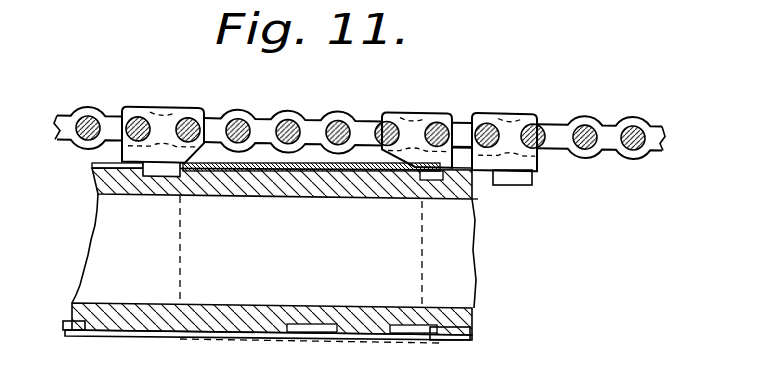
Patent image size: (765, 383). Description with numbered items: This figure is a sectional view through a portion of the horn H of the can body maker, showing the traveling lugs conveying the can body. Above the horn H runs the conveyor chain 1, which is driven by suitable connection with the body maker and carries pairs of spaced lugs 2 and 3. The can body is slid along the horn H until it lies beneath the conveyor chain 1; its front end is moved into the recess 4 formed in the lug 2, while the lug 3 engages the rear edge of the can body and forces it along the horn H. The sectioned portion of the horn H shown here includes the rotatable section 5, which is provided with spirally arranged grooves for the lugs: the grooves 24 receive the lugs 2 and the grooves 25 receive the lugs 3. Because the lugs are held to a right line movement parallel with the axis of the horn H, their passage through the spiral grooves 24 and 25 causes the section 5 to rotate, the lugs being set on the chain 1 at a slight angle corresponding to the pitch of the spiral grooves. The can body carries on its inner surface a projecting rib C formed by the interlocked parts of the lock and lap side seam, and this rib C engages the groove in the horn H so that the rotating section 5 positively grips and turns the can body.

The conveyor chain 1 is at (328, 120).
The lug 2 is at (477, 185).
The lug 3 is at (167, 170).
The recess 4 is at (418, 176).
The rotatable section 5 is at (477, 200).
The spiral groove 24 is at (438, 340).
The spiral groove 25 is at (78, 337).
The projecting rib C is at (223, 338).
The horn H is at (291, 251).